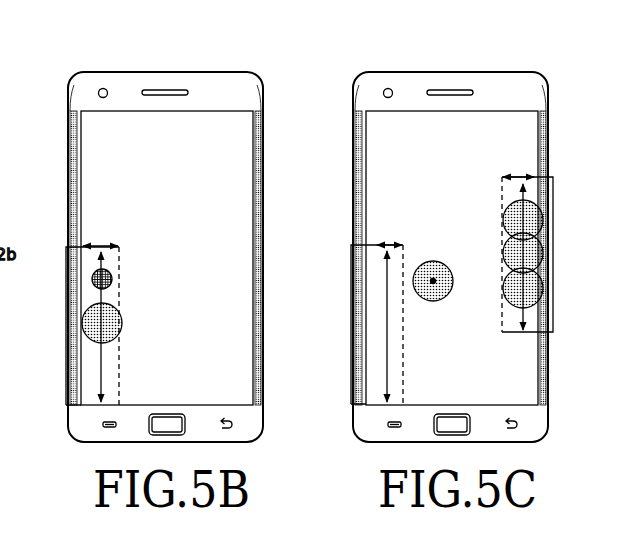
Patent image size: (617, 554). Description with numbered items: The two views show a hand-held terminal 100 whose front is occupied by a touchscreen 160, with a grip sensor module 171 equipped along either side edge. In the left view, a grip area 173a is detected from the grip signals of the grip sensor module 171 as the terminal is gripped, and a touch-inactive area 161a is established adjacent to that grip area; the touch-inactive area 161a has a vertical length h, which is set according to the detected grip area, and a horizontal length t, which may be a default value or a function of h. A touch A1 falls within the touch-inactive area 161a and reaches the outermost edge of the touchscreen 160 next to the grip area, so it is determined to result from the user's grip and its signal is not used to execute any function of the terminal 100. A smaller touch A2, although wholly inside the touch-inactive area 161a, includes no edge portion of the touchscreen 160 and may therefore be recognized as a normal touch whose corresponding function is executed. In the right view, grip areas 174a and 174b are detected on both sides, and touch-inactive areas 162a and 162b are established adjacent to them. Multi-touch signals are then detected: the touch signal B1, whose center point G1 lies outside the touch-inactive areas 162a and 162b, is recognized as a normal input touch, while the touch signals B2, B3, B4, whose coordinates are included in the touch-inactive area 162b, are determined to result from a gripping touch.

In FIG. 5B, the terminal 100 is at (265, 88).
In FIG. 5C, the terminal 100 is at (479, 257).
In FIG. 5B, the touchscreen 160 is at (202, 122).
In FIG. 5C, the touchscreen 160 is at (452, 216).
In FIG. 5B, the grip sensor module 171 is at (72, 108).
In FIG. 5C, the grip sensor module 171 is at (454, 219).
In FIG. 5B, the grip area 173a is at (66, 323).
In FIG. 5B, the touch-inactive area 161a is at (121, 381).
In FIG. 5B, the touch A2 is at (112, 279).
In FIG. 5B, the touch A1 is at (121, 320).
In FIG. 5C, the grip area 174a is at (351, 322).
In FIG. 5C, the touch-inactive area 162a is at (405, 382).
In FIG. 5C, the touch signal B1 is at (436, 265).
In FIG. 5C, the touch center point G1 is at (433, 284).
In FIG. 5C, the grip area 174b is at (554, 253).
In FIG. 5C, the touch-inactive area 162b is at (502, 183).
In FIG. 5C, the touch signal B2 is at (503, 220).
In FIG. 5C, the touch signal B3 is at (503, 253).
In FIG. 5C, the touch signal B4 is at (503, 288).